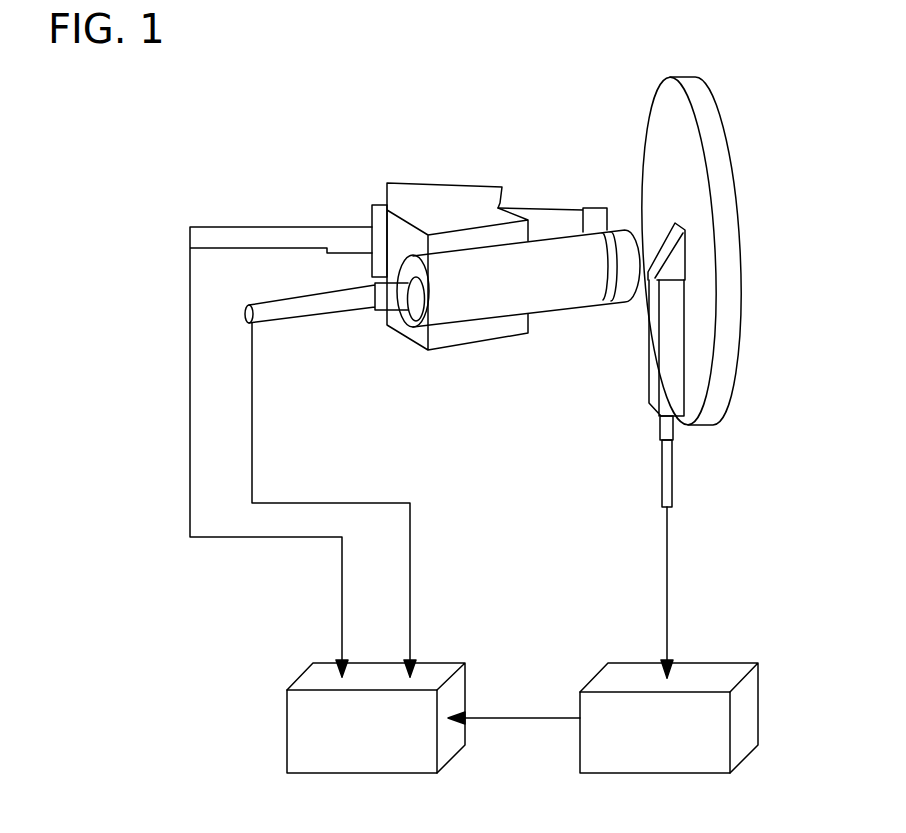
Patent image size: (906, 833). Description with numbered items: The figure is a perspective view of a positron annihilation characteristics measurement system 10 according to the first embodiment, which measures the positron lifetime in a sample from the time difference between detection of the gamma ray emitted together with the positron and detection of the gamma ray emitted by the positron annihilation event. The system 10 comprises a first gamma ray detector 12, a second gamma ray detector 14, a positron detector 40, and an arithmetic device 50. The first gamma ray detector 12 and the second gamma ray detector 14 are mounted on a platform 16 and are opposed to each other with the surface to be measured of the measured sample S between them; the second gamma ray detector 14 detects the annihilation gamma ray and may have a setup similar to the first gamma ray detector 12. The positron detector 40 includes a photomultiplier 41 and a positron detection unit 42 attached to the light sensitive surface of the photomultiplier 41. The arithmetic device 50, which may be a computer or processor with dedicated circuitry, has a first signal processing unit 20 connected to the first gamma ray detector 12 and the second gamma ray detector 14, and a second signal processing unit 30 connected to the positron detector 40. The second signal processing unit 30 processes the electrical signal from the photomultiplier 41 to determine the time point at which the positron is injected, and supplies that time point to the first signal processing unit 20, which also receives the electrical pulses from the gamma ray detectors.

The positron annihilation characteristics measurement system 10 is at (413, 57).
The first gamma ray detector 12 is at (558, 312).
The second gamma ray detector 14 is at (540, 217).
The platform 16 is at (422, 200).
The measured sample S is at (660, 138).
The first signal processing unit 20 is at (445, 668).
The second signal processing unit 30 is at (668, 681).
The positron detector 40 is at (596, 450).
The photomultiplier 41 is at (662, 380).
The positron detection unit 42 is at (648, 275).
The arithmetic device 50 is at (522, 661).